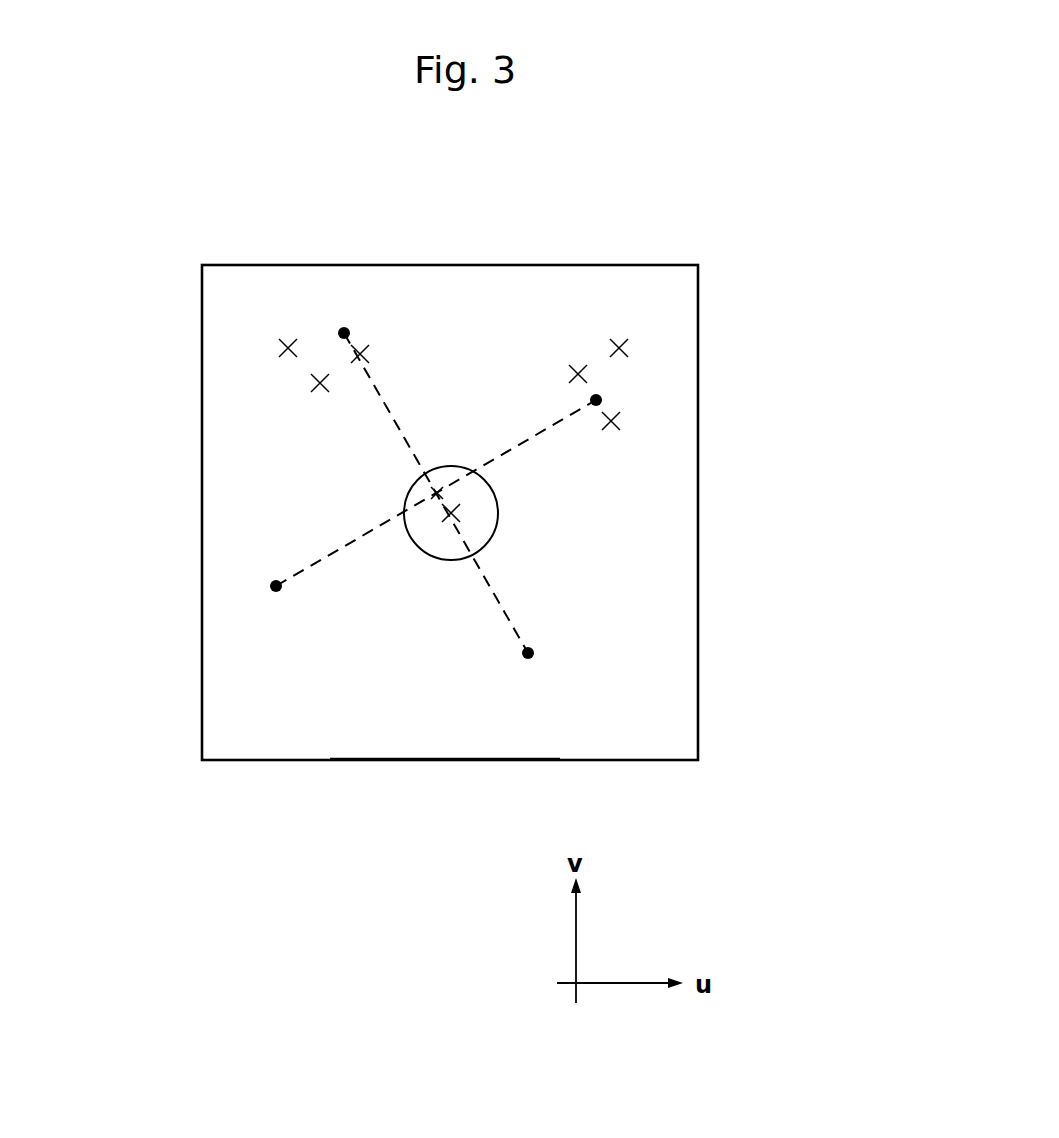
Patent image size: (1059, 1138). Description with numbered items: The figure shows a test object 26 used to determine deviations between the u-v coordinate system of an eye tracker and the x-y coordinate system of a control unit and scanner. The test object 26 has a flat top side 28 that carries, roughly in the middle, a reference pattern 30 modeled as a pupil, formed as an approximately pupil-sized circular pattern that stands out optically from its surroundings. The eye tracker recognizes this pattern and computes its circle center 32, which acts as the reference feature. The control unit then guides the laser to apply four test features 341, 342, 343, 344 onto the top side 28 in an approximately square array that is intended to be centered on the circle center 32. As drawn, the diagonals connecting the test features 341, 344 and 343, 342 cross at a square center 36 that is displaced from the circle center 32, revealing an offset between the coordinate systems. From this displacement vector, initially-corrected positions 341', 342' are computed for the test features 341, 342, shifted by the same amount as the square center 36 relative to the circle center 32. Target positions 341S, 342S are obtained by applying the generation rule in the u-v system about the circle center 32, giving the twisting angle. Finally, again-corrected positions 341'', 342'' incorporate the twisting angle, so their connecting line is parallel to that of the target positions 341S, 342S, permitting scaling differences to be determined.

The test object 26 is at (698, 517).
The flat top side 28 is at (345, 737).
The reference pattern 30 is at (432, 558).
The circle center 32 is at (456, 512).
The square center 36 is at (438, 490).
The first test feature 341 is at (387, 437).
The second test feature 342 is at (687, 368).
The third test feature 343 is at (270, 586).
The fourth test feature 344 is at (535, 648).
The initially-corrected u,v position of first test feature 341' is at (418, 290).
The again-corrected u,v position of first test feature 341'' is at (214, 399).
The target coordinate position of first test feature 341S is at (280, 346).
The initially-corrected u,v position of second test feature 342' is at (703, 408).
The again-corrected u,v position of second test feature 342'' is at (518, 356).
The target coordinate position of second test feature 342S is at (619, 341).